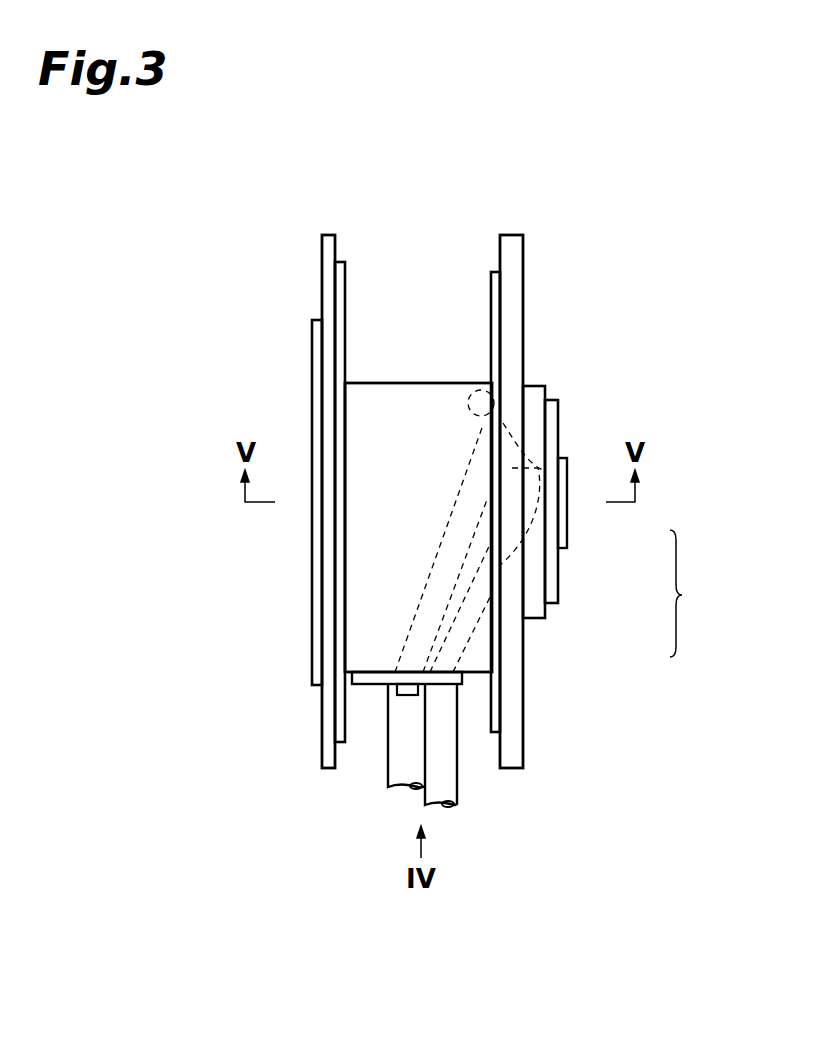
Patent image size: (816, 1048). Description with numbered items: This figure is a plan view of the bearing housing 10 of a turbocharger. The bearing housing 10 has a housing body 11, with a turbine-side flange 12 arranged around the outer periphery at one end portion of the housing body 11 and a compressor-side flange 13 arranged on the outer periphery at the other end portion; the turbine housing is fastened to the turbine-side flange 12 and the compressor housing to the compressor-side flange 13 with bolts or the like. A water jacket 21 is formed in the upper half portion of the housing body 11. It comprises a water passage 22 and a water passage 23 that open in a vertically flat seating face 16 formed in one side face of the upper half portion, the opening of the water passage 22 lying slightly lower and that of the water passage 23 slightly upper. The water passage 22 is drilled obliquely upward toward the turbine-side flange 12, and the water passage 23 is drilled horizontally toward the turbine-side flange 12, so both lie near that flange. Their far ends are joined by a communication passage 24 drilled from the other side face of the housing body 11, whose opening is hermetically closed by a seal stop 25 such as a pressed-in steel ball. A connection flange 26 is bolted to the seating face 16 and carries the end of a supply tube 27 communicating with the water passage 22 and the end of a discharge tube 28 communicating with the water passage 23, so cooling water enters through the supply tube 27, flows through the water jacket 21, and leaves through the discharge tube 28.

The bearing housing 10 is at (313, 363).
The housing body 11 is at (393, 383).
The turbine-side flange 12 is at (512, 282).
The compressor-side flange 13 is at (327, 283).
The seating face 16 is at (473, 673).
The water jacket 21 is at (694, 593).
The water passage 22 is at (463, 632).
The water passage 23 is at (450, 565).
The communication passage 24 is at (505, 423).
The seal stop 25 is at (478, 384).
The connection flange 26 is at (372, 681).
The supply tube 27 is at (447, 768).
The discharge tube 28 is at (402, 767).